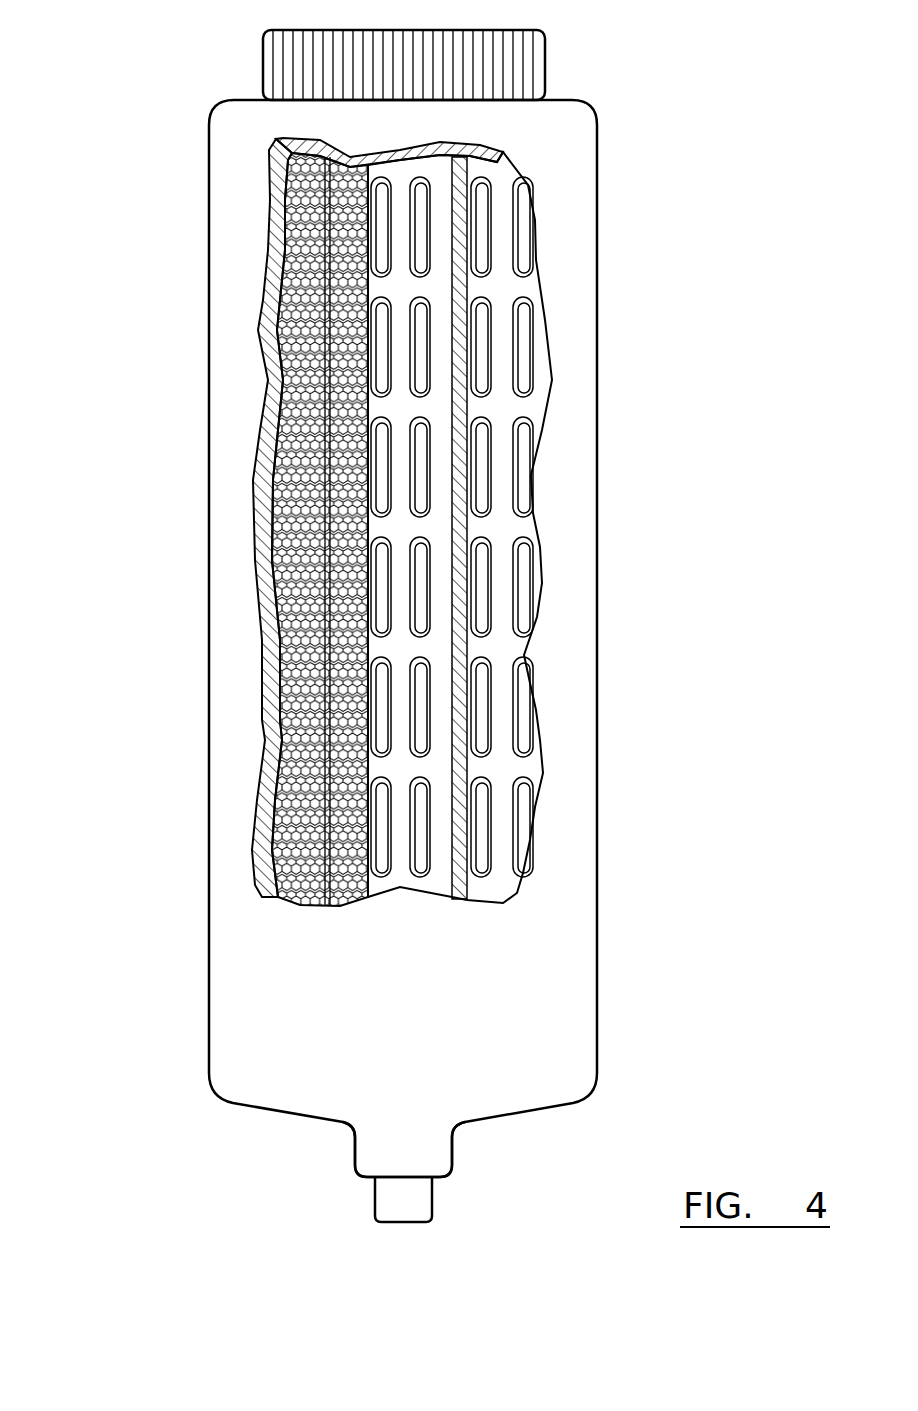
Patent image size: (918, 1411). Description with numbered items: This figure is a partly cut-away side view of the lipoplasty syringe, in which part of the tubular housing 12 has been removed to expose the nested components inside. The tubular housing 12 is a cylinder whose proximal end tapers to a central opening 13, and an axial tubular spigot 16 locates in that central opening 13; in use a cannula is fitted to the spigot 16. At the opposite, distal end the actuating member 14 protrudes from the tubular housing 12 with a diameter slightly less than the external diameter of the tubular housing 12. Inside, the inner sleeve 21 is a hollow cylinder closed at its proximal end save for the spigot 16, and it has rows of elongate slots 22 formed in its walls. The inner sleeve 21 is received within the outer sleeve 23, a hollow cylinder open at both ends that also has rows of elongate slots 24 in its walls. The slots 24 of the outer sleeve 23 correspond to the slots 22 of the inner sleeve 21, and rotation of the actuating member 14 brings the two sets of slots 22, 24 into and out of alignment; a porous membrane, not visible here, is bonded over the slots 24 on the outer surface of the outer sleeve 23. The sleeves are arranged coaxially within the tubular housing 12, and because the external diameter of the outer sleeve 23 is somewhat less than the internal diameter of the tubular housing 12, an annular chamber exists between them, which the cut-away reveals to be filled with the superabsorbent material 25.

The tubular housing 12 is at (228, 912).
The central opening 13 is at (380, 1147).
The actuating member 14 is at (512, 68).
The axial tubular spigot 16 is at (405, 1213).
The inner sleeve 21 is at (565, 527).
The elongate slots 22 is at (527, 357).
The outer sleeve 23 is at (442, 582).
The elongate slots 24 is at (422, 705).
The superabsorbent material 25 is at (347, 407).